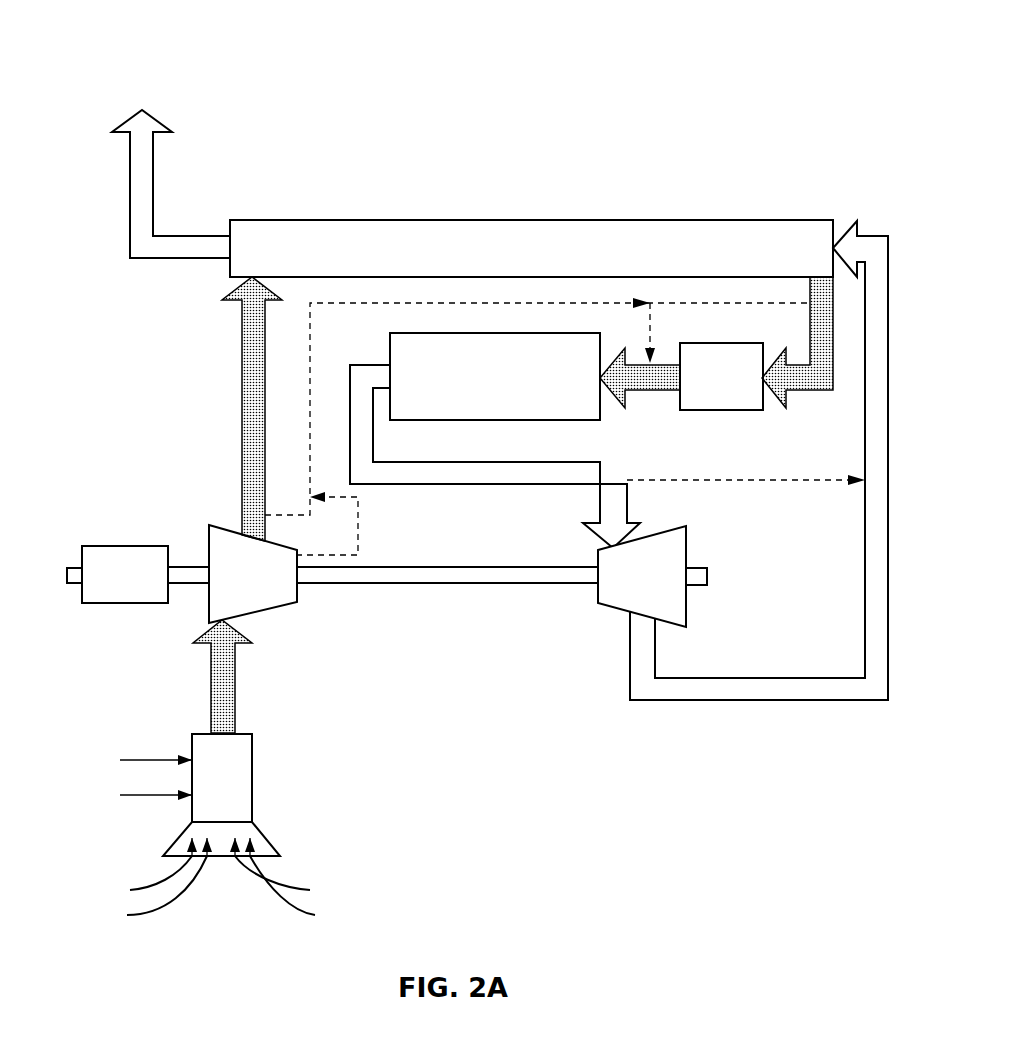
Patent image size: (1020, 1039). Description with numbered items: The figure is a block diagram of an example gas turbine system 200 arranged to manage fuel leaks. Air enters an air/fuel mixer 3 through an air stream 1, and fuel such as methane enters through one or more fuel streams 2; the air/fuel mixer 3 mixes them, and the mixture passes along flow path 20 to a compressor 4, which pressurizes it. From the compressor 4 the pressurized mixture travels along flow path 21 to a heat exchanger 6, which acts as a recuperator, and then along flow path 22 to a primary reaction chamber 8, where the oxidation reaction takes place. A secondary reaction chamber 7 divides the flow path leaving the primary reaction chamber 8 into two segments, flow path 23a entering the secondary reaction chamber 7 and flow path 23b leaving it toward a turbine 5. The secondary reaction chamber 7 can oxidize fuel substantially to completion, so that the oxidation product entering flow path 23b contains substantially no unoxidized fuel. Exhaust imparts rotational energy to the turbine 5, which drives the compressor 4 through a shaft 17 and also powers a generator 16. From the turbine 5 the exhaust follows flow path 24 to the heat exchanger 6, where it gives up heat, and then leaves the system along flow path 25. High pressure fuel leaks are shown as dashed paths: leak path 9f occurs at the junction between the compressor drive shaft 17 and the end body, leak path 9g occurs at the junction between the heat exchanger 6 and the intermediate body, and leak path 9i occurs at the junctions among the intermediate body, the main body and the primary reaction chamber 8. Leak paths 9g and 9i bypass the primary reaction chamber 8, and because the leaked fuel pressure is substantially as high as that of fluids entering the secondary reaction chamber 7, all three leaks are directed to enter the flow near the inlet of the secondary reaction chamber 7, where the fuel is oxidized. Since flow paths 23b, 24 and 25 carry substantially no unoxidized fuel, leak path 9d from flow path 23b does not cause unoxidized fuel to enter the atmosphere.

The gas turbine system 200 is at (126, 56).
The air stream 1 is at (262, 908).
The fuel streams 2 is at (135, 757).
The air/fuel mixer 3 is at (257, 777).
The compressor 4 is at (244, 588).
The turbine 5 is at (634, 588).
The heat exchanger 6 is at (522, 262).
The secondary reaction chamber 7 is at (487, 389).
The primary reaction chamber 8 is at (713, 391).
The generator 16 is at (110, 588).
The shaft 17 is at (463, 587).
The flow path 20 is at (237, 696).
The flow path 21 is at (242, 450).
The flow path 22 is at (810, 393).
The flow path segment 23a is at (660, 393).
The flow path segment 23b is at (500, 487).
The flow path 24 is at (765, 702).
The flow path 25 is at (155, 183).
The leak path 9d is at (778, 487).
The high pressure leak path 9f is at (360, 533).
The high pressure leak path 9g is at (320, 305).
The high pressure leak path 9i is at (723, 305).